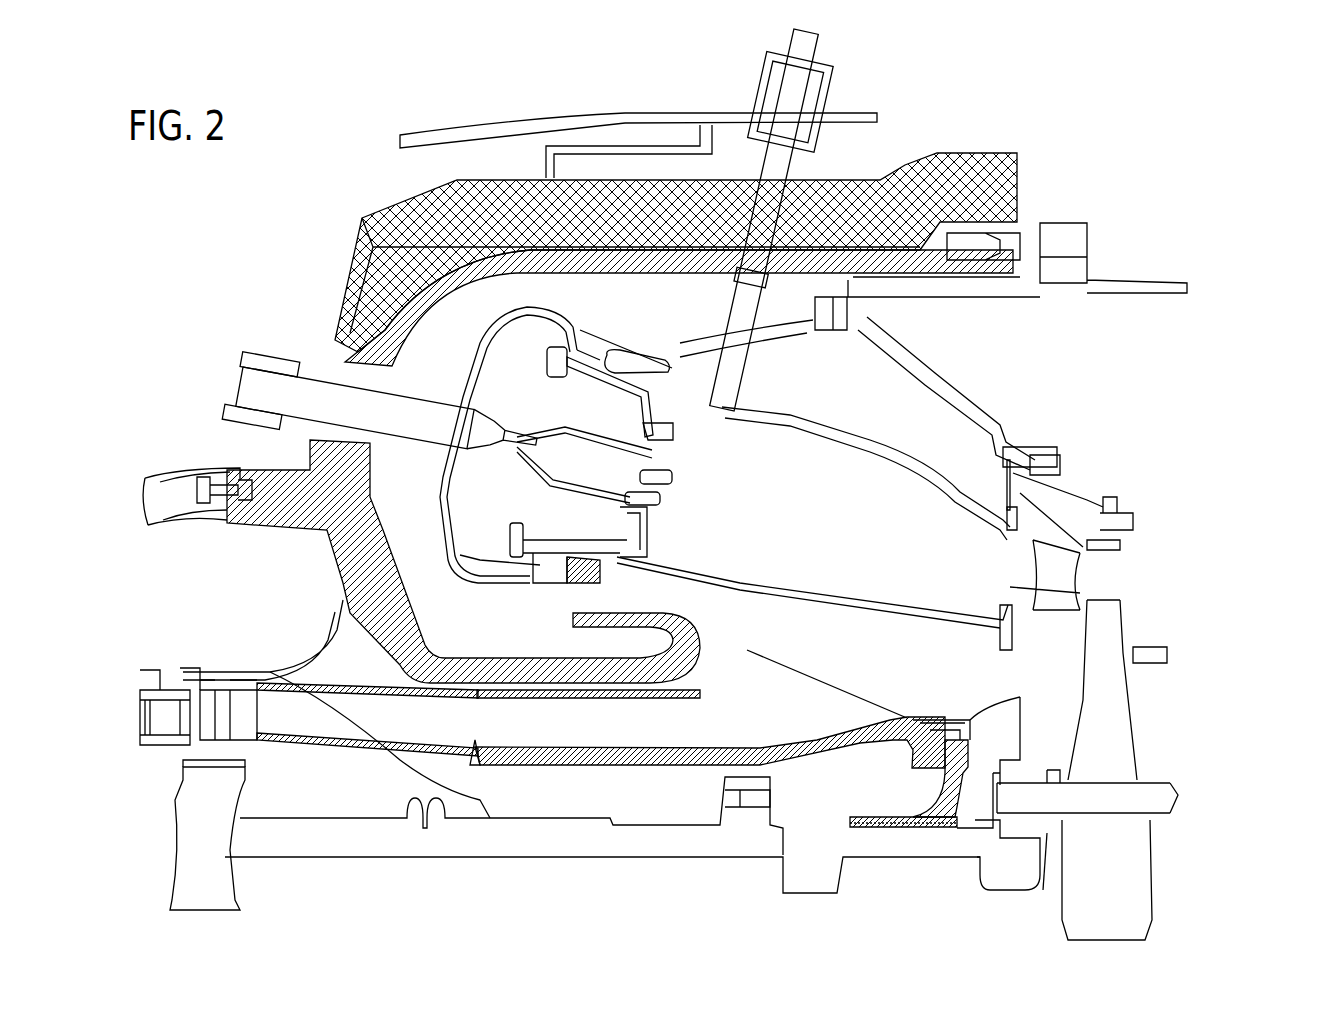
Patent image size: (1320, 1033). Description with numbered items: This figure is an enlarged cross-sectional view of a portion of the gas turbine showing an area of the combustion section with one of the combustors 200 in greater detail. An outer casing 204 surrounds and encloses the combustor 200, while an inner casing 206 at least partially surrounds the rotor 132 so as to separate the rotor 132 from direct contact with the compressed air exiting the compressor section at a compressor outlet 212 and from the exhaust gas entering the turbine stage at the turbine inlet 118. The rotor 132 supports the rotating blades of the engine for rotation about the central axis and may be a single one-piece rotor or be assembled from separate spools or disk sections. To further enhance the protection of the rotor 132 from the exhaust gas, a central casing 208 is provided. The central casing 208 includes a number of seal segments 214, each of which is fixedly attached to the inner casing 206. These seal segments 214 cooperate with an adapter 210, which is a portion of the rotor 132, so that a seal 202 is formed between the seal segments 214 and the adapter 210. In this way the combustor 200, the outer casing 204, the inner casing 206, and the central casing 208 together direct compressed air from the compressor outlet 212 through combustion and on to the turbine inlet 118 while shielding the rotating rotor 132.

The combustor 200 is at (1196, 110).
The outer casing 204 is at (388, 222).
The turbine inlet 118 is at (1033, 560).
The rotor 132 is at (1127, 870).
The compressor outlet 212 is at (315, 717).
The inner casing 206 is at (572, 760).
The central casing 208 is at (923, 782).
The seal segments 214 is at (968, 752).
The seal 202 is at (914, 845).
The adapter 210 is at (1007, 857).